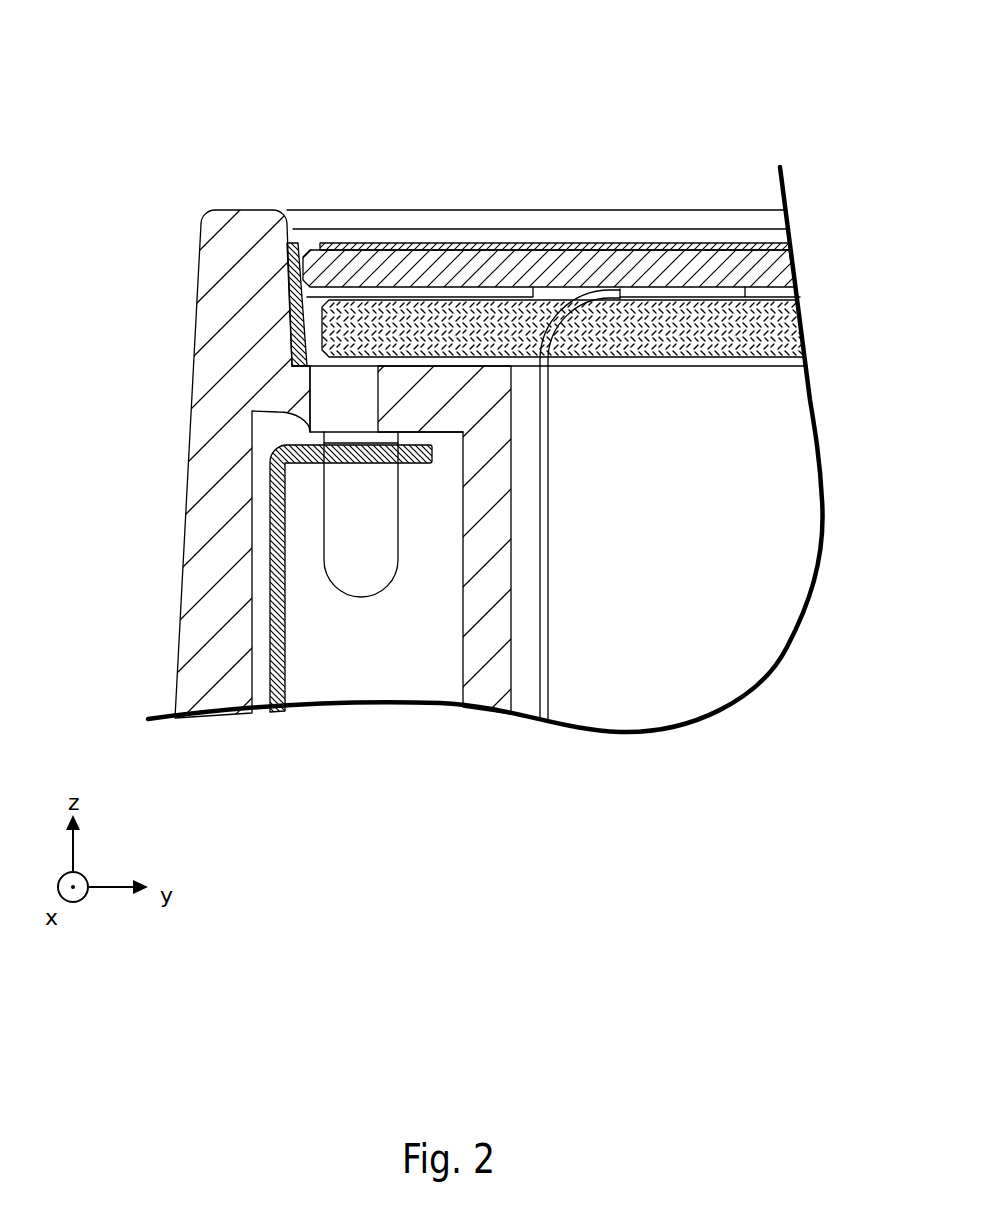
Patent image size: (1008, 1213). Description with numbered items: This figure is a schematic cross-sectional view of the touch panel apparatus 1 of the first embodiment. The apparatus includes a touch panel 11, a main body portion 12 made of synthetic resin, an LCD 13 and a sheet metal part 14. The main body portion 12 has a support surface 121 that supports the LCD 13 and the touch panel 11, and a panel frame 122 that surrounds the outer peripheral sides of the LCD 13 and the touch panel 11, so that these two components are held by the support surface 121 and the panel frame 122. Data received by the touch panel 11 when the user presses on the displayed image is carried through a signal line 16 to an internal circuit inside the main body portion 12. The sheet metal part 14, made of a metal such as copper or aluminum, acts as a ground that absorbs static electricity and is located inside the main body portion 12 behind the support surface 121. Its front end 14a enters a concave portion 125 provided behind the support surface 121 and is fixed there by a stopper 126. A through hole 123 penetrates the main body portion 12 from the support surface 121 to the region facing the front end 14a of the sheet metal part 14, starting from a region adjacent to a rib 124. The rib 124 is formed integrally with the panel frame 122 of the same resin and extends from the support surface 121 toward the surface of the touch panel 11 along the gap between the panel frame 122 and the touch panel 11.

The touch panel apparatus 1 is at (552, 84).
The touch panel 11 is at (598, 262).
The main body portion 12 is at (272, 407).
The support surface 121 is at (418, 363).
The panel frame 122 is at (250, 315).
The through hole 123 is at (330, 405).
The rib 124 is at (298, 258).
The concave portion 125 is at (300, 480).
The stopper 126 is at (343, 540).
The LCD 13 is at (767, 320).
The sheet metal part 14 is at (259, 610).
The front end of sheet metal part 14a is at (424, 462).
The signal line 16 is at (550, 692).